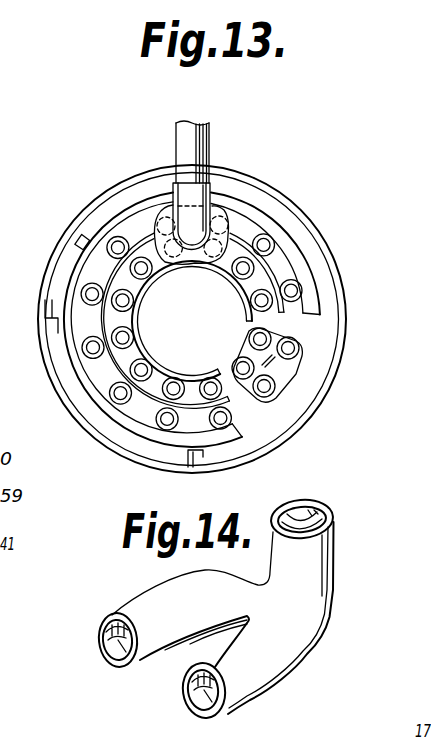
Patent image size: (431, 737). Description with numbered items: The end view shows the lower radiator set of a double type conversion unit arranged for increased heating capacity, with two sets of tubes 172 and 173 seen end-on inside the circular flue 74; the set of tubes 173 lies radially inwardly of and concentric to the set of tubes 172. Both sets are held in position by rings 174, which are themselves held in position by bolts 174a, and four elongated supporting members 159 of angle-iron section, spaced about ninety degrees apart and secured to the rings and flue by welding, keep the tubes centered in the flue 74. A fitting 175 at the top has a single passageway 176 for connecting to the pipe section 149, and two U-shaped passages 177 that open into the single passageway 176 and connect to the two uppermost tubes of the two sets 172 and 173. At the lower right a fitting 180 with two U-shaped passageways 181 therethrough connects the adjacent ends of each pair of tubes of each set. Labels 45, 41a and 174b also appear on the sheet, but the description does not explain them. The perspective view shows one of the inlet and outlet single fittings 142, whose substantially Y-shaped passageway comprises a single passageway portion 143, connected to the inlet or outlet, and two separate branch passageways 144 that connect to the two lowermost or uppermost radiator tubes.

In FIG. 13, the element (partial) 45 is at (11, 109).
In FIG. 13, the element (partial) 41a is at (29, 170).
In FIG. 13, the flue 74 is at (75, 424).
In FIG. 13, the pipe section 149 is at (176, 136).
In FIG. 13, the supporting member 159 is at (160, 465).
In FIG. 13, the set of tubes 172 is at (272, 241).
In FIG. 13, the set of tubes 173 is at (283, 260).
In FIG. 13, the ring 174 is at (130, 423).
In FIG. 13, the bolt 174a is at (80, 243).
In FIG. 13, the tab 174b is at (229, 222).
In FIG. 13, the fitting 175 is at (211, 211).
In FIG. 13, the single passageway 176 is at (211, 186).
In FIG. 13, the U-shaped passage 177 is at (160, 210).
In FIG. 13, the fitting 180 is at (290, 340).
In FIG. 13, the U-shaped passageway 181 is at (245, 390).
In FIG. 14, the fitting 142 is at (328, 638).
In FIG. 14, the single passageway portion 143 is at (318, 506).
In FIG. 14, the branch passageway 144 is at (100, 650).